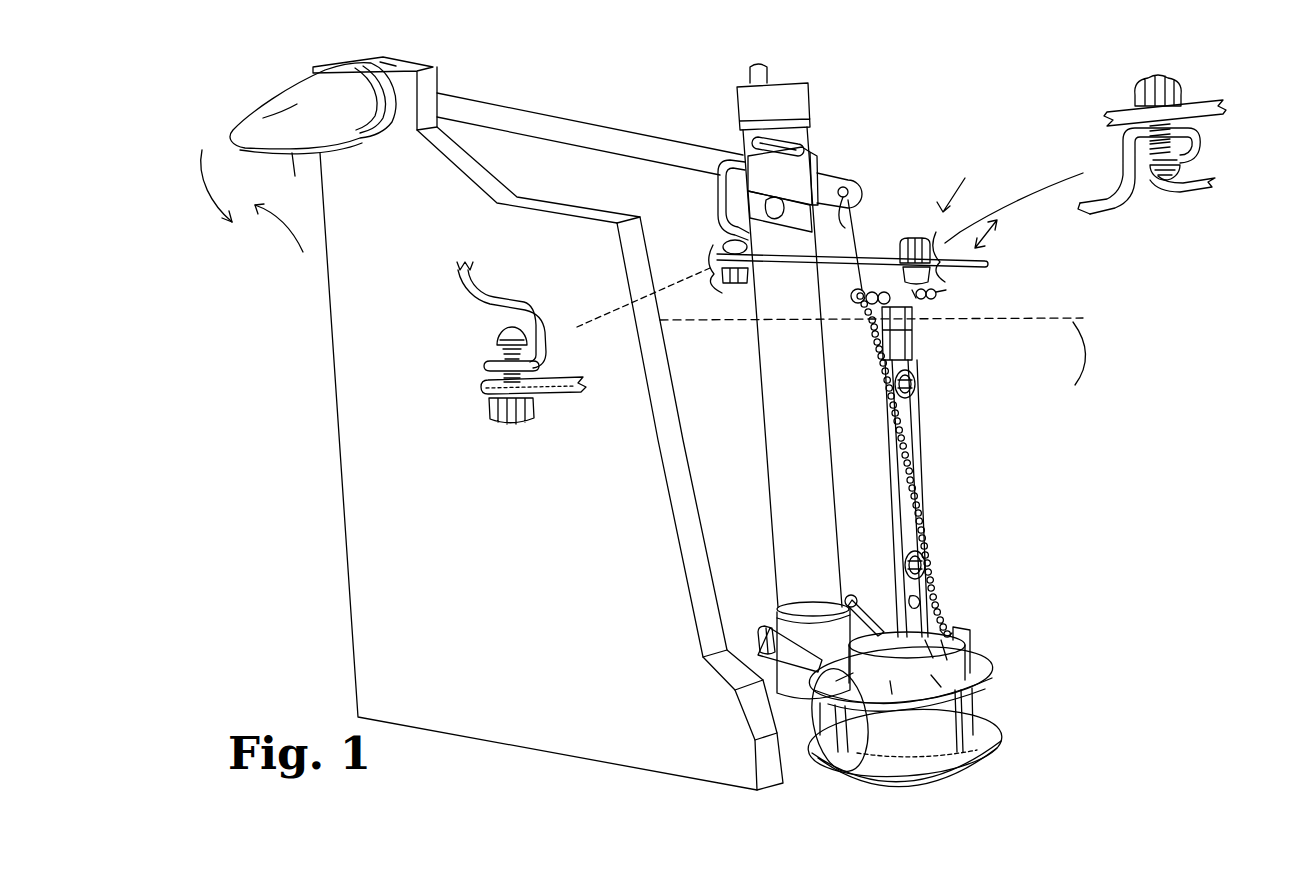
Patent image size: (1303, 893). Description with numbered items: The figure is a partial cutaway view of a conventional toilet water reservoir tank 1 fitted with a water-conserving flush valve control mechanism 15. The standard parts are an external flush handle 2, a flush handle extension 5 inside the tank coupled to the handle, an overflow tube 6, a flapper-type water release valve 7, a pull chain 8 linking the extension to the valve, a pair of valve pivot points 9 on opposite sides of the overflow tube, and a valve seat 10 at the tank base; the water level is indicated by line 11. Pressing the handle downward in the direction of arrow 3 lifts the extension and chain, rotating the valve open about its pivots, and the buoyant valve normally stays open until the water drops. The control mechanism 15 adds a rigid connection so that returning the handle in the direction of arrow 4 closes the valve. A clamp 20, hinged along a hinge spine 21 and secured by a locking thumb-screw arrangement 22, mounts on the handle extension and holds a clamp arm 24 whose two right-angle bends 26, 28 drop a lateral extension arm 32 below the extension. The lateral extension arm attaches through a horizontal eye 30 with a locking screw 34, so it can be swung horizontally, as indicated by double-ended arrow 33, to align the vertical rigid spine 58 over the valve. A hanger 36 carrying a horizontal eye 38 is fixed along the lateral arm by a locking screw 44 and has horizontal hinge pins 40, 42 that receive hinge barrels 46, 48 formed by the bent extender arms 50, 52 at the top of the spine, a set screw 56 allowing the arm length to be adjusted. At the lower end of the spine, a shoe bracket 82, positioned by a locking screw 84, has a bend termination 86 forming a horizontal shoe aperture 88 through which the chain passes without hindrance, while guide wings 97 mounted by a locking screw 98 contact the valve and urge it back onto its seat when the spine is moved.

The toilet water reservoir tank 1 is at (688, 471).
The external toilet flush handle 2 is at (292, 152).
The arrow 3 is at (204, 186).
The arrow 4 is at (279, 241).
The flush handle extension 5 is at (578, 122).
The overflow tube 6 is at (760, 357).
The water release flapper-type valve 7 is at (816, 727).
The pull chain 8 is at (891, 436).
The valve pivot points 9 is at (851, 594).
The valve seat 10 is at (994, 752).
The water level line 11 is at (1070, 366).
The flush valve control mechanism 15 is at (1000, 194).
The clamp 20 is at (816, 160).
The hinge spine 21 is at (792, 142).
The locking thumb-screw attachment arrangement 22 is at (771, 221).
The clamp arm 24 is at (472, 267).
The right-angle bend 26 is at (487, 308).
The right-angle bend 28 is at (543, 312).
The horizontal eye 30 is at (488, 364).
The lateral extension arm 32 is at (872, 262).
The double-ended arrow 33 is at (998, 237).
The locking screw 34 is at (496, 421).
The hanger 36 is at (902, 273).
The horizontal eye 38 is at (1196, 134).
The horizontal hinge pin 40 is at (854, 305).
The horizontal hinge pin 42 is at (946, 291).
The locking screw 44 is at (912, 238).
The horizontal hinge barrel 46 is at (926, 318).
The horizontal hinge barrel 48 is at (955, 304).
The extender arm 50 is at (912, 326).
The extender arm 52 is at (914, 346).
The set screw 56 is at (915, 393).
The vertical rigid spine 58 is at (922, 425).
The shoe bracket 82 is at (936, 598).
The locking screw 84 is at (900, 562).
The bend termination 86 is at (926, 662).
The horizontal shoe aperture 88 is at (918, 650).
The guide wings 97 is at (966, 633).
The locking screw 98 is at (906, 601).